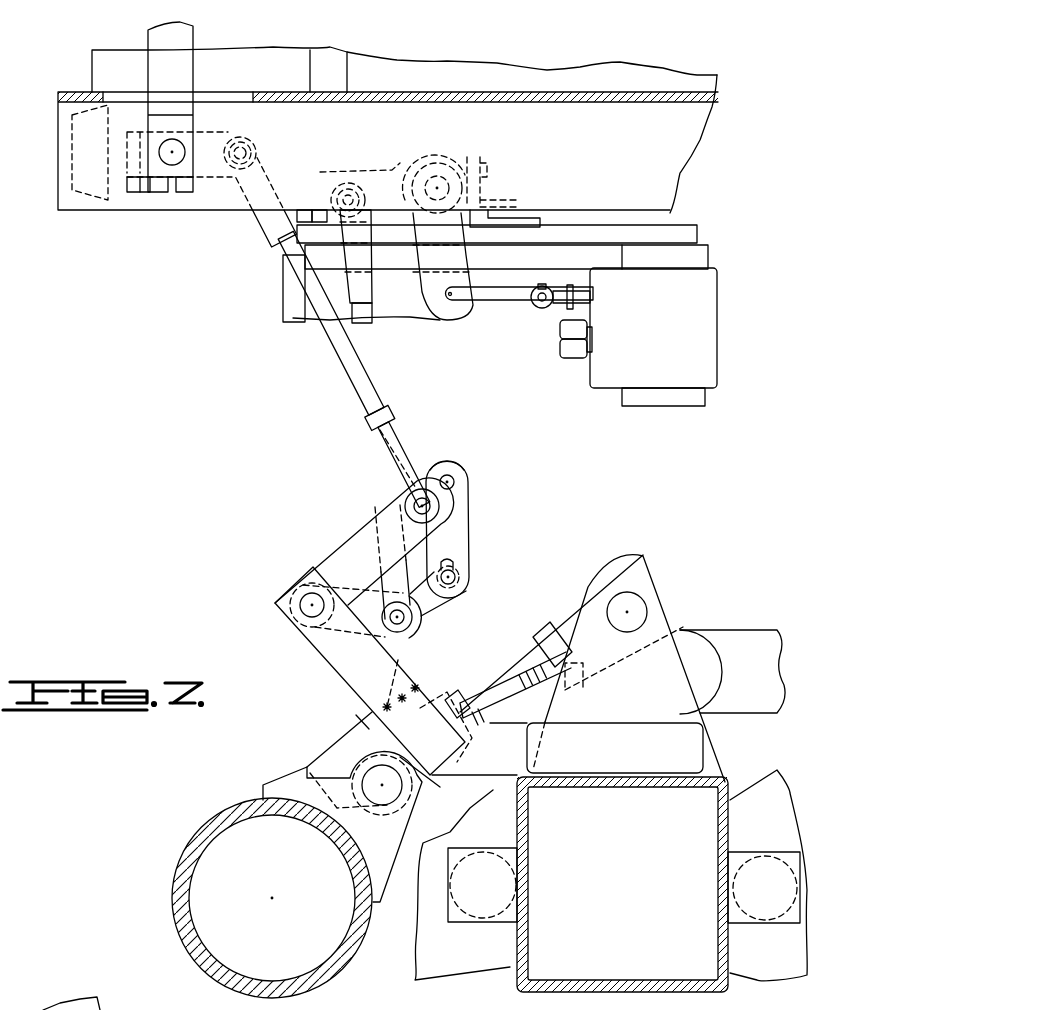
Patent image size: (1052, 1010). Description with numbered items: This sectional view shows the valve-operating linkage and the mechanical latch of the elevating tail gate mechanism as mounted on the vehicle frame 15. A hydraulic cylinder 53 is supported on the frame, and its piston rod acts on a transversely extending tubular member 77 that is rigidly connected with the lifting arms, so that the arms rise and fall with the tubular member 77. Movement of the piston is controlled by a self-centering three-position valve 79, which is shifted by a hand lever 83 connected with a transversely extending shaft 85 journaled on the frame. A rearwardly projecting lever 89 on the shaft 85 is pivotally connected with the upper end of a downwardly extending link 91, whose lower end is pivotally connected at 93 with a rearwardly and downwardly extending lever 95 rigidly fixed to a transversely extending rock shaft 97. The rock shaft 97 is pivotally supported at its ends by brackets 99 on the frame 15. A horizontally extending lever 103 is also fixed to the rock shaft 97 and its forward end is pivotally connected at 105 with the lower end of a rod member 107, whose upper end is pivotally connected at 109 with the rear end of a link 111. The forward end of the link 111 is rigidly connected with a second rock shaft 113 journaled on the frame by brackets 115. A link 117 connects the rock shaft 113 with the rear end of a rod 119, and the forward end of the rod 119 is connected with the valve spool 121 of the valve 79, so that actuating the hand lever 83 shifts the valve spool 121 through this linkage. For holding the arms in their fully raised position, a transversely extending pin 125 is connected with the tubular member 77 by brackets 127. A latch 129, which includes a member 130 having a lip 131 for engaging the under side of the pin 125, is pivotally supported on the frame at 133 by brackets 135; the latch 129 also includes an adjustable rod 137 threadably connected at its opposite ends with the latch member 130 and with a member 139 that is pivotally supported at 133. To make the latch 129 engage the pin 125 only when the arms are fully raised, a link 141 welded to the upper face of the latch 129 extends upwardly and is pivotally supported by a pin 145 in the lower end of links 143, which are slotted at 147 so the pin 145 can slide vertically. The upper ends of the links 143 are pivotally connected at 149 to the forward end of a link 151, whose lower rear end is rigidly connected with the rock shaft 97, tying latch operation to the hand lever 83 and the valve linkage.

The vehicle frame 15 is at (677, 143).
The hydraulic cylinder 53 is at (397, 323).
The tubular member 77 is at (180, 923).
The valve 79 is at (597, 383).
The hand lever 83 is at (185, 32).
The shaft 85 is at (165, 160).
The lever 89 is at (213, 173).
The link 91 is at (277, 245).
The pivotal connection 93 is at (417, 505).
The lever 95 is at (345, 543).
The rock shaft 97 is at (307, 603).
The brackets 99 is at (352, 680).
The lever 103 is at (318, 648).
The pivotal connection 105 is at (402, 617).
The rod member 107 is at (384, 388).
The pivotal connection 109 is at (333, 180).
The link 111 is at (392, 167).
The rock shaft 113 is at (463, 152).
The brackets 115 is at (437, 156).
The link 117 is at (430, 252).
The rod 119 is at (465, 307).
The valve spool 121 is at (580, 287).
The pin 125 is at (387, 800).
The brackets 127 is at (287, 775).
The latch 129 is at (354, 725).
The latch member 130 is at (343, 743).
The lip 131 is at (272, 898).
The pivot 133 is at (633, 603).
The brackets 135 is at (670, 640).
The adjustable rod 137 is at (533, 667).
The member 139 is at (572, 608).
The link 141 is at (437, 632).
The links 143 is at (457, 563).
The pin 145 is at (453, 580).
The slot 147 is at (463, 553).
The pivotal connection 149 is at (460, 478).
The link 151 is at (450, 453).